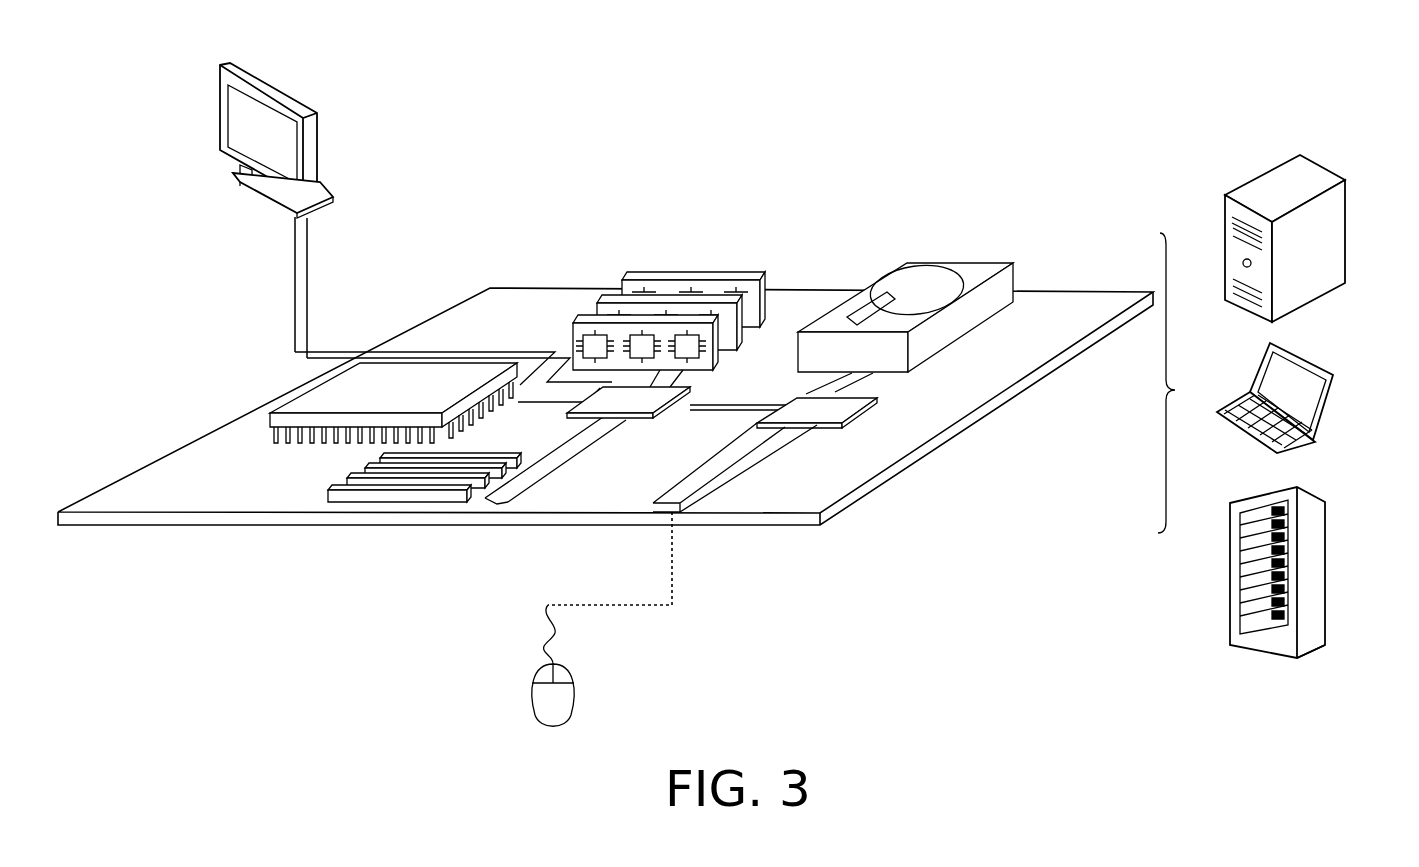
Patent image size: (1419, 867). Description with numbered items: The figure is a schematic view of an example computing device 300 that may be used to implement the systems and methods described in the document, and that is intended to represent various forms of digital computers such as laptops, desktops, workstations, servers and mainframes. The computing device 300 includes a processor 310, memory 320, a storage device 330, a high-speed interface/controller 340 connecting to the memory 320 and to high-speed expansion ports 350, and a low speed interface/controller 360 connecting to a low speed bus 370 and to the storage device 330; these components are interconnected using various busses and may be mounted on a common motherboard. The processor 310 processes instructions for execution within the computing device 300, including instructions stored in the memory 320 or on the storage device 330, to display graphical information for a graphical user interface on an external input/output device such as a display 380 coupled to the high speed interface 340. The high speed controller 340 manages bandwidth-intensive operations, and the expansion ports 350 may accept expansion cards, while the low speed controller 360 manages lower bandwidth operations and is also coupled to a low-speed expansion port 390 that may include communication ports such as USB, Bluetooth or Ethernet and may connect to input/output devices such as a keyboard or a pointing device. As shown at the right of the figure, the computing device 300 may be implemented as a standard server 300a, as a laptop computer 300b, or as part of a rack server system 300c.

The computing device 300 is at (773, 134).
The processor 310 is at (268, 414).
The memory 320 is at (690, 282).
The storage device 330 is at (956, 263).
The high-speed interface/controller 340 is at (634, 421).
The high-speed expansion ports 350 is at (327, 489).
The low speed interface/controller 360 is at (806, 397).
The low speed bus 370 is at (754, 457).
The display 380 is at (222, 124).
The low-speed expansion port 390 is at (685, 512).
The standard server 300a is at (1256, 176).
The laptop computer 300b is at (1309, 370).
The rack server system 300c is at (1312, 560).